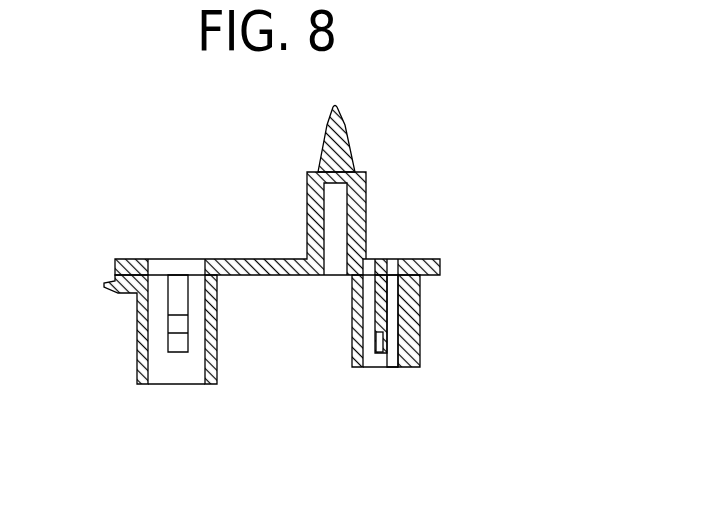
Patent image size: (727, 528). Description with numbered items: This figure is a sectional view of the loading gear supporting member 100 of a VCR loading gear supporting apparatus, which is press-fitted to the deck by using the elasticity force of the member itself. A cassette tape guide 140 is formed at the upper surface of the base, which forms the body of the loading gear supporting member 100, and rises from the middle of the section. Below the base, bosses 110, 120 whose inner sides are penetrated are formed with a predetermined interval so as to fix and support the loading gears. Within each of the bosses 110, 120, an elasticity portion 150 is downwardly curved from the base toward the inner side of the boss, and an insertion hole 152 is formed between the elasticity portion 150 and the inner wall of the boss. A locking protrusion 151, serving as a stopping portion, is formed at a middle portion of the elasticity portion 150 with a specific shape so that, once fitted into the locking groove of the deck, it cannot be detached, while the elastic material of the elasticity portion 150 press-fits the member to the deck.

The loading gear supporting member 100 is at (471, 246).
The boss 110 is at (177, 370).
The boss 120 is at (410, 325).
The cassette tape guide 140 is at (343, 144).
The elasticity portion 150 is at (178, 297).
The locking protrusion 151 is at (178, 323).
The insertion hole 152 is at (393, 268).